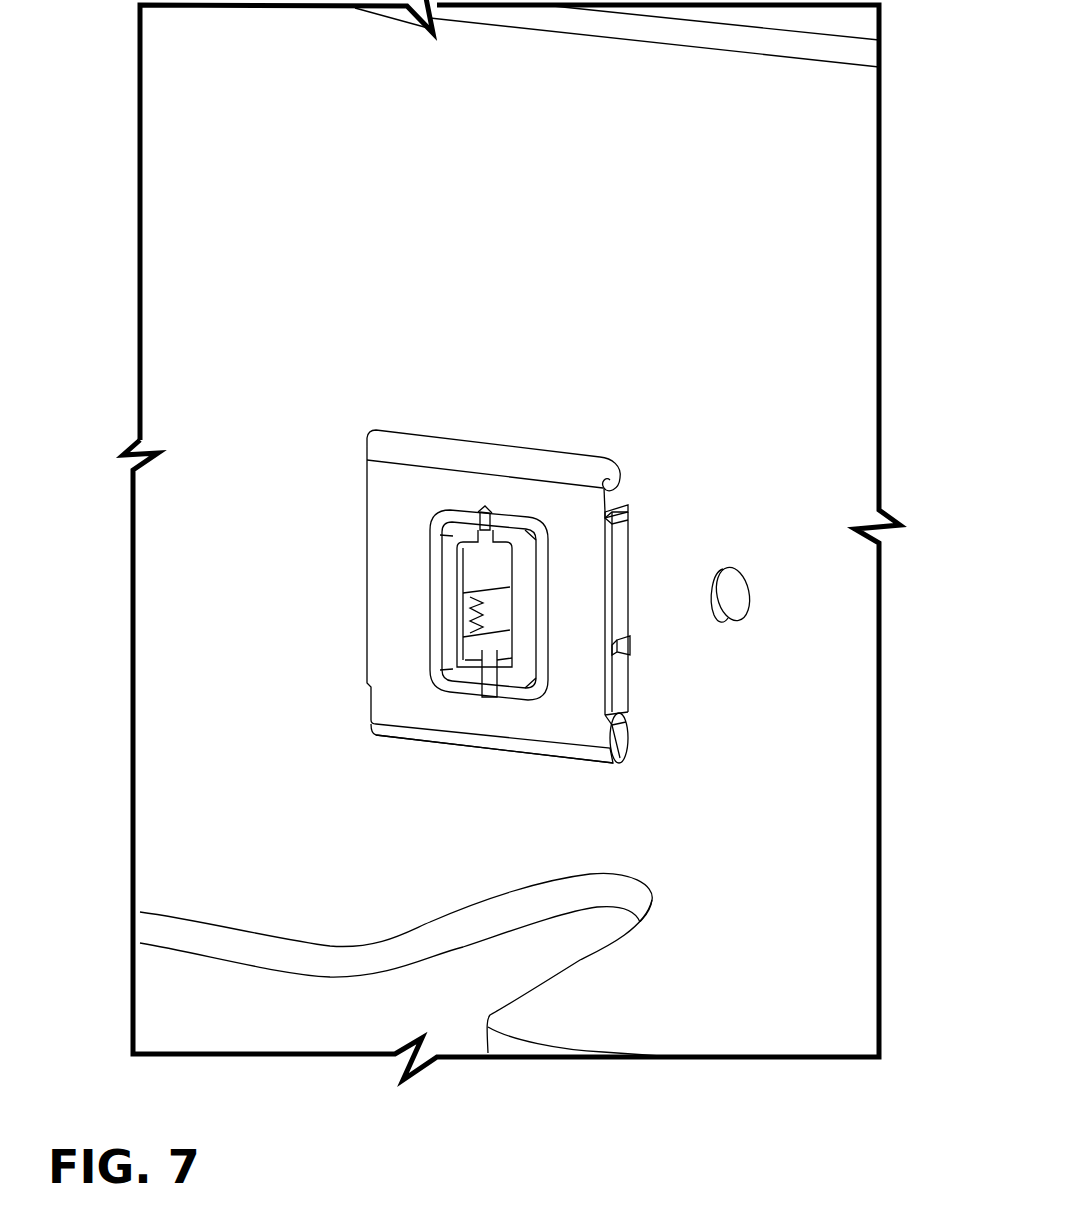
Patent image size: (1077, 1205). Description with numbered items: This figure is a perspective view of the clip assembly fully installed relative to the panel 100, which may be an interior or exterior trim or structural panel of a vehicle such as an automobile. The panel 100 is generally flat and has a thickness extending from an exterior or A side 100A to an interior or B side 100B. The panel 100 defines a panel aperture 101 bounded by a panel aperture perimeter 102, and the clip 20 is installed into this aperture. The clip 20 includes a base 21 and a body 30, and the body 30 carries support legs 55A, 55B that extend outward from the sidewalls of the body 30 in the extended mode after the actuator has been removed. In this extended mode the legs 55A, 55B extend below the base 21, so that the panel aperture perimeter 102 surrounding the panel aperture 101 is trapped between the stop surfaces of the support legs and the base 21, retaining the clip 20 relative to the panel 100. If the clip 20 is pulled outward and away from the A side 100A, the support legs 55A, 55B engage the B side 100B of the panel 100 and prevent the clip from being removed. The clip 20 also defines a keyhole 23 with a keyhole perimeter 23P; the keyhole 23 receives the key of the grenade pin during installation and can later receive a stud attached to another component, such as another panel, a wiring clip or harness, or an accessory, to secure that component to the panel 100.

The panel 100 is at (800, 310).
The A side 100A is at (820, 355).
The B side 100B is at (820, 450).
The clip 20 is at (530, 550).
The base 21 is at (430, 452).
The keyhole 23 is at (485, 560).
The keyhole perimeter 23P is at (522, 520).
The body 30 is at (620, 492).
The panel aperture 101 is at (622, 506).
The panel aperture perimeter 102 is at (628, 572).
The first support leg 55A is at (628, 648).
The support leg 55B is at (624, 513).